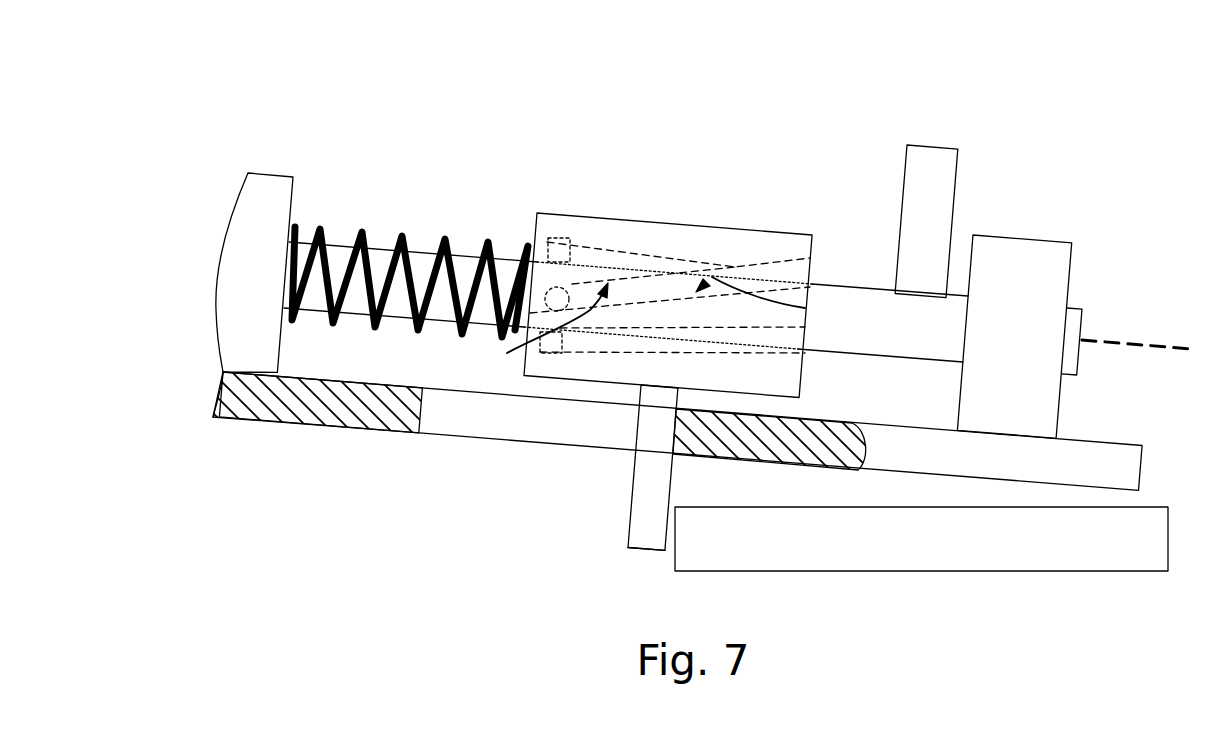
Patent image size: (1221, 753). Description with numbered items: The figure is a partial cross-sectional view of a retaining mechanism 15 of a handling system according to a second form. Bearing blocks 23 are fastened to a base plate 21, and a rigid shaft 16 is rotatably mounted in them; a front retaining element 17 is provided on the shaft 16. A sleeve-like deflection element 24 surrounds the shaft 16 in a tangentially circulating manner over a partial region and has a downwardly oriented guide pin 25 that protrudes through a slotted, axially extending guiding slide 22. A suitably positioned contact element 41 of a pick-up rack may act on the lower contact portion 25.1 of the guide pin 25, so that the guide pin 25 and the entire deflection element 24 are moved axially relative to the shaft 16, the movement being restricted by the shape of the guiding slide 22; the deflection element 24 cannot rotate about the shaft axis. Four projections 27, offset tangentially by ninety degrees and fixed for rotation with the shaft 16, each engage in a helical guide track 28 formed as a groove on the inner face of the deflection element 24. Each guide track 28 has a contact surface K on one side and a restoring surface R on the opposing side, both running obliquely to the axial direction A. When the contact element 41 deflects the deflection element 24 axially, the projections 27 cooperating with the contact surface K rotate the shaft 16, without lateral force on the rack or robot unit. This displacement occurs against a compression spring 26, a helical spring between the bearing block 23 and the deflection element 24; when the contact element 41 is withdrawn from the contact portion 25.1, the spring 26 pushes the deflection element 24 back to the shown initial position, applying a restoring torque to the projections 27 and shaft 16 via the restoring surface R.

The retaining mechanism 15 is at (880, 108).
The shaft 16 is at (847, 338).
The front retaining element 17 is at (945, 210).
The base plate 21 is at (262, 420).
The guiding slide 22 is at (522, 432).
The bearing block 23 is at (276, 178).
The deflection element 24 is at (728, 228).
The guide pin 25 is at (645, 445).
The lower contact portion 25.1 is at (626, 523).
The compression spring 26 is at (365, 228).
The projection 27 is at (548, 292).
The guide track 28 is at (647, 252).
The contact element 41 is at (885, 550).
The axial direction A is at (1153, 342).
The contact surface K is at (763, 299).
The restoring surface R is at (552, 336).